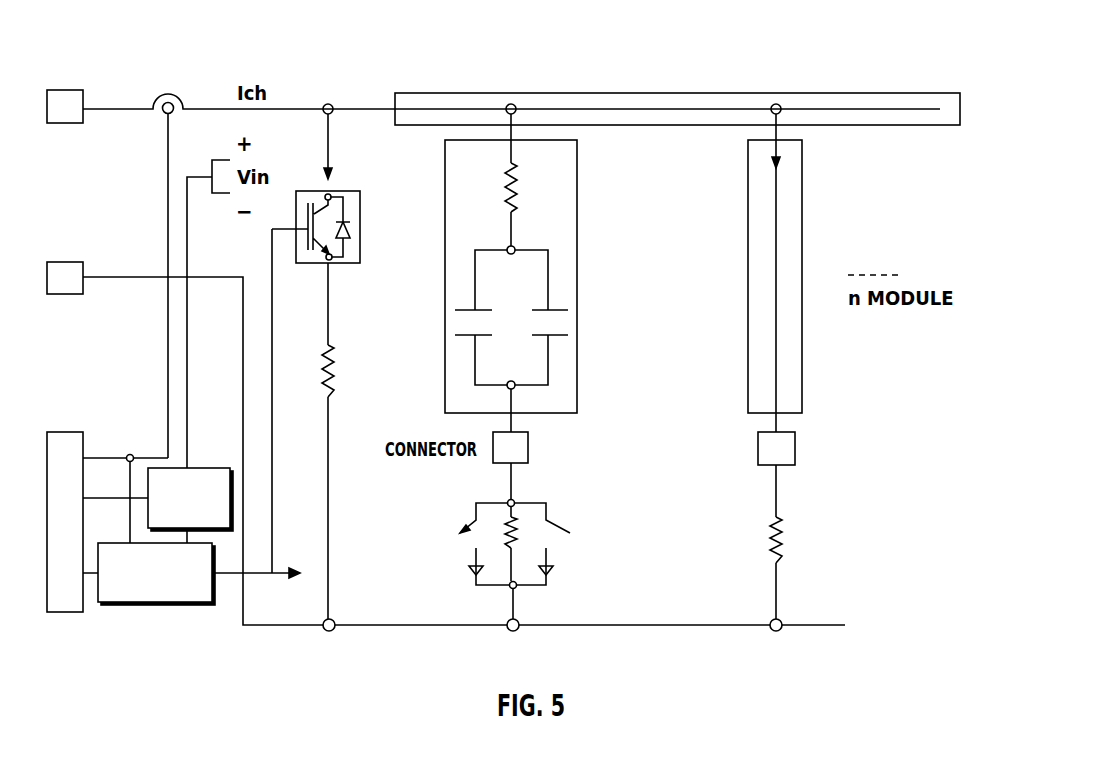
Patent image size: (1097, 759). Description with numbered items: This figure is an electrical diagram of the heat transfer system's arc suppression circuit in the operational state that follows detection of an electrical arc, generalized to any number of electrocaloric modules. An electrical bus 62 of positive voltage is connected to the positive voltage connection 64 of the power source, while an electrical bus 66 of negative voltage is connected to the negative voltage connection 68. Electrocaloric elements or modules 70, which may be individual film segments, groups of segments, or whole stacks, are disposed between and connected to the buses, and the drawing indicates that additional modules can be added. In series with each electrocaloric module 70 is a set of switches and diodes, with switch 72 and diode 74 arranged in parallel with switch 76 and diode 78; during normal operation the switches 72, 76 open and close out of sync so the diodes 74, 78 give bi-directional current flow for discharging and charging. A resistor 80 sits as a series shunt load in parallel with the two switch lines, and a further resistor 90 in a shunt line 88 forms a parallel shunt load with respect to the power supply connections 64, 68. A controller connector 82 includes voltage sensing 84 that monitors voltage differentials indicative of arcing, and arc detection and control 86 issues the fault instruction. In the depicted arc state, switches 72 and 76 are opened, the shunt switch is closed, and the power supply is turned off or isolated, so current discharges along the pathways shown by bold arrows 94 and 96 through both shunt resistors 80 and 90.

The electrical bus 62 is at (372, 109).
The positive voltage connection 64 is at (67, 90).
The electrical bus 66 is at (377, 628).
The negative voltage connection 68 is at (67, 262).
The electrocaloric element or module 70 is at (543, 140).
The switch 72 is at (468, 524).
The diode 74 is at (464, 578).
The switch 76 is at (552, 524).
The diode 78 is at (553, 578).
The resistor 80 is at (498, 538).
The controller connector 82 is at (67, 612).
The voltage sensing 84 is at (202, 468).
The arc detection and control 86 is at (167, 602).
The shunt line 88 is at (330, 517).
The resistor 90 is at (326, 390).
The arrow 94 is at (656, 108).
The arrow 96 is at (320, 190).